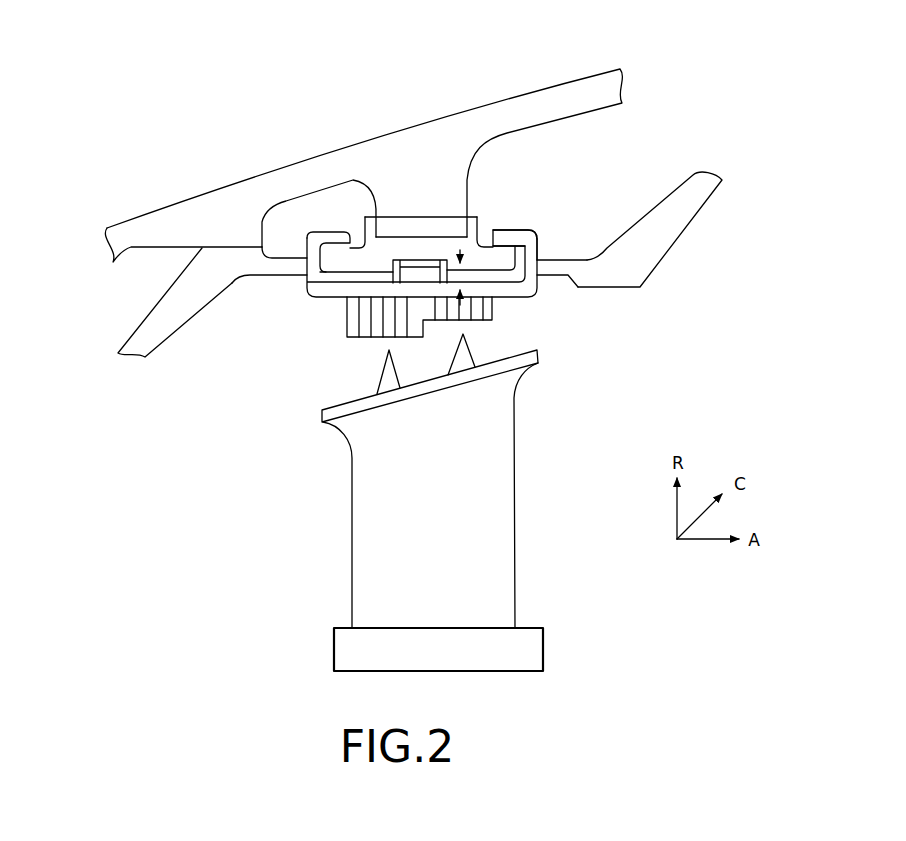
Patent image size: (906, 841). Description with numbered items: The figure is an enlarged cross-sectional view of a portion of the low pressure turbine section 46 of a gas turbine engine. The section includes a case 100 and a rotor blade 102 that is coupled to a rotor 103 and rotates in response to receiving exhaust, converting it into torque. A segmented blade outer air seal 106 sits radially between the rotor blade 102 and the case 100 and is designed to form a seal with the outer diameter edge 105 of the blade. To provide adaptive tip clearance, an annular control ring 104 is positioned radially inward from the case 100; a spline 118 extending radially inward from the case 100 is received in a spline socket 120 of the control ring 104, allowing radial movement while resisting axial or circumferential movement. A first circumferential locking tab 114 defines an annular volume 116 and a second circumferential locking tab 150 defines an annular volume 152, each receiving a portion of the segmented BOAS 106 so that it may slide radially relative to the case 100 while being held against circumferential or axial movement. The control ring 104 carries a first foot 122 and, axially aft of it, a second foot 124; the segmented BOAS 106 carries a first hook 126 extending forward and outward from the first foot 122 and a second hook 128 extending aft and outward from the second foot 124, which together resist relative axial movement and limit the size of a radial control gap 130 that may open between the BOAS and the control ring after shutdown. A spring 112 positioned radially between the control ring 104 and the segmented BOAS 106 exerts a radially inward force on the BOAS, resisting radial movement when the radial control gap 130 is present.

The low pressure turbine section 46 is at (131, 113).
The case 100 is at (383, 136).
The rotor blade 102 is at (512, 523).
The rotor 103 is at (543, 641).
The control ring 104 is at (480, 245).
The outer diameter edge 105 is at (389, 350).
The segmented blade outer air seal 106 is at (527, 290).
The spring 112 is at (398, 277).
The first circumferential locking tab 114 is at (183, 298).
The annular volume 116 is at (304, 291).
The spline 118 is at (377, 207).
The spline socket 120 is at (383, 233).
The first foot 122 is at (333, 253).
The second foot 124 is at (508, 247).
The first hook 126 is at (303, 242).
The second hook 128 is at (538, 246).
The radial control gap 130 is at (463, 256).
The second circumferential locking tab 150 is at (667, 250).
The annular volume 152 is at (537, 270).